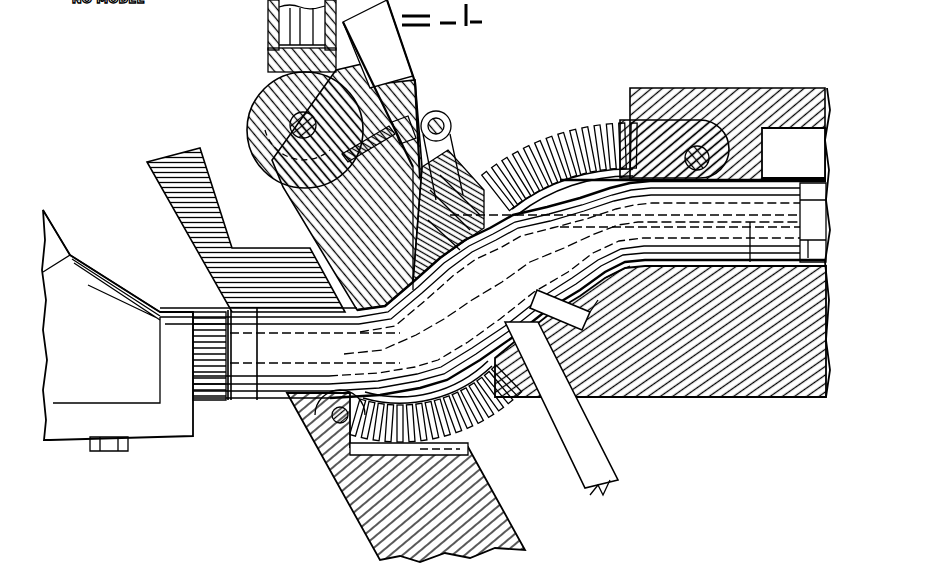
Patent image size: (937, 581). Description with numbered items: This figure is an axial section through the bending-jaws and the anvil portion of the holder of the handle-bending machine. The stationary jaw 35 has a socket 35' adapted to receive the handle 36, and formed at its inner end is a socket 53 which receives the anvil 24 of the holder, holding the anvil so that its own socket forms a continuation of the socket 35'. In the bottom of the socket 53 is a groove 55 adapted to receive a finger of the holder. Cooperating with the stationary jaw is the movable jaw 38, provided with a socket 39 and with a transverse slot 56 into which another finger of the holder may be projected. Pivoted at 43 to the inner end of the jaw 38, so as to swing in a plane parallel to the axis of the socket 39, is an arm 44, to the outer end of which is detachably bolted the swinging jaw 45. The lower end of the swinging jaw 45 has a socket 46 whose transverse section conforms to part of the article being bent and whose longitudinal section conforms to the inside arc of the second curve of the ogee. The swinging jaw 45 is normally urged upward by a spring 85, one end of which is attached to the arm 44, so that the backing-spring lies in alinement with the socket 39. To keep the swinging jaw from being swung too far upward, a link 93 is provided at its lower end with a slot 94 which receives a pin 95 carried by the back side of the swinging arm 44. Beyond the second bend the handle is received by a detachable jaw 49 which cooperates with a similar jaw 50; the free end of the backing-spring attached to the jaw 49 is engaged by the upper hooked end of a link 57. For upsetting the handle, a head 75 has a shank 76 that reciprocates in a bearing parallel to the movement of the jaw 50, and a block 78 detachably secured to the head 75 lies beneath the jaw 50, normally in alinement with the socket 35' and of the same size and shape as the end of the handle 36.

The anvil 24 is at (607, 283).
The stationary jaw 35 is at (660, 350).
The socket 35' is at (803, 338).
The handle 36 is at (768, 233).
The jaw 38 is at (765, 112).
The socket 39 is at (818, 228).
The pivot 43 is at (674, 150).
The arm 44 is at (445, 232).
The swinging jaw 45 is at (322, 207).
The socket 46 is at (313, 397).
The detachable jaw 49 is at (372, 512).
The jaw 50 is at (237, 240).
The socket 53 is at (593, 277).
The groove 55 is at (567, 318).
The transverse slot 56 is at (793, 153).
The link 57 is at (596, 492).
The head 75 is at (117, 330).
The shank 76 is at (62, 244).
The block 78 is at (242, 372).
The spring 85 is at (268, 56).
The link 93 is at (381, 89).
The slot 94 is at (440, 176).
The pin 95 is at (446, 150).